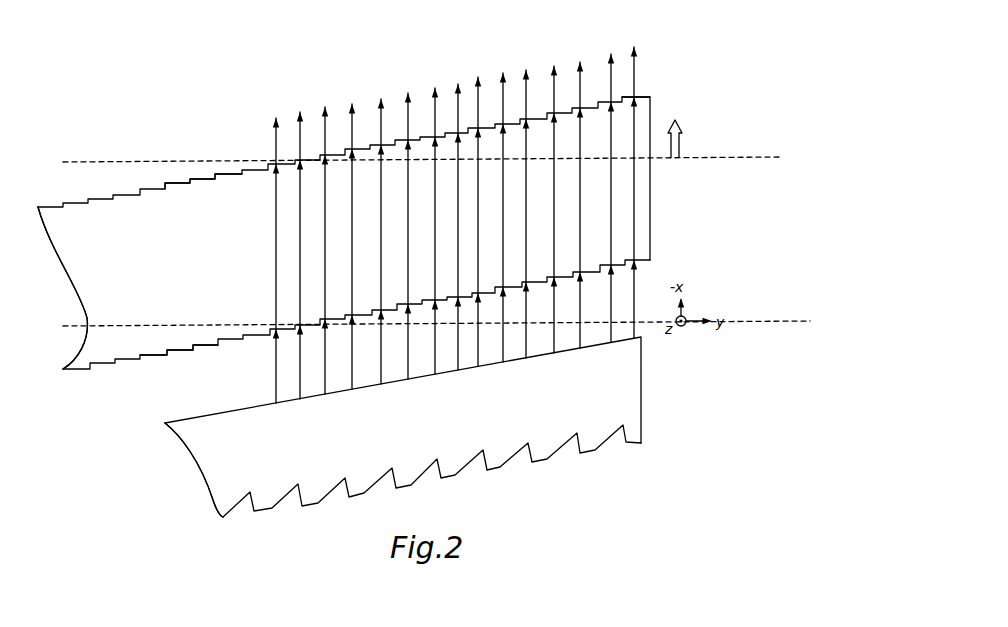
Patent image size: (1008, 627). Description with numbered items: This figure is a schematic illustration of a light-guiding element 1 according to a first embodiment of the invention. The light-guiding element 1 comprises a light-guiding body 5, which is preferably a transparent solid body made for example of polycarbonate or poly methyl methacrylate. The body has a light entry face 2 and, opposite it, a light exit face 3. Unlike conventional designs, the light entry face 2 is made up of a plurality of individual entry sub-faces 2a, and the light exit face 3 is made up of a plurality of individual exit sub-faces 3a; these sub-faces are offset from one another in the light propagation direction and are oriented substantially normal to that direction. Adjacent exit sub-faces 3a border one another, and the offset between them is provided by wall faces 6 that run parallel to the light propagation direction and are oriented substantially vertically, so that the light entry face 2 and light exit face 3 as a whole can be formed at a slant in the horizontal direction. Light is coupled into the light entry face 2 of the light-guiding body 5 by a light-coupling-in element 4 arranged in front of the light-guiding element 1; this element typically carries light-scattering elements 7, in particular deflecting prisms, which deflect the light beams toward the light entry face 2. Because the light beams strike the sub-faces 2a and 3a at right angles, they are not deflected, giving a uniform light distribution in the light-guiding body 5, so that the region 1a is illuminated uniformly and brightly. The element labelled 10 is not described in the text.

The light-guiding element 1 is at (173, 233).
The region 1a is at (617, 98).
The light entry face 2 is at (204, 351).
The entry sub-faces 2a is at (180, 351).
The light exit face 3 is at (235, 155).
The exit sub-faces 3a is at (206, 172).
The light-coupling-in element 4 is at (218, 463).
The light-guiding body 5 is at (165, 258).
The wall faces 6 is at (56, 205).
The light-scattering elements 7 is at (522, 462).
The support wedge 10 is at (418, 427).